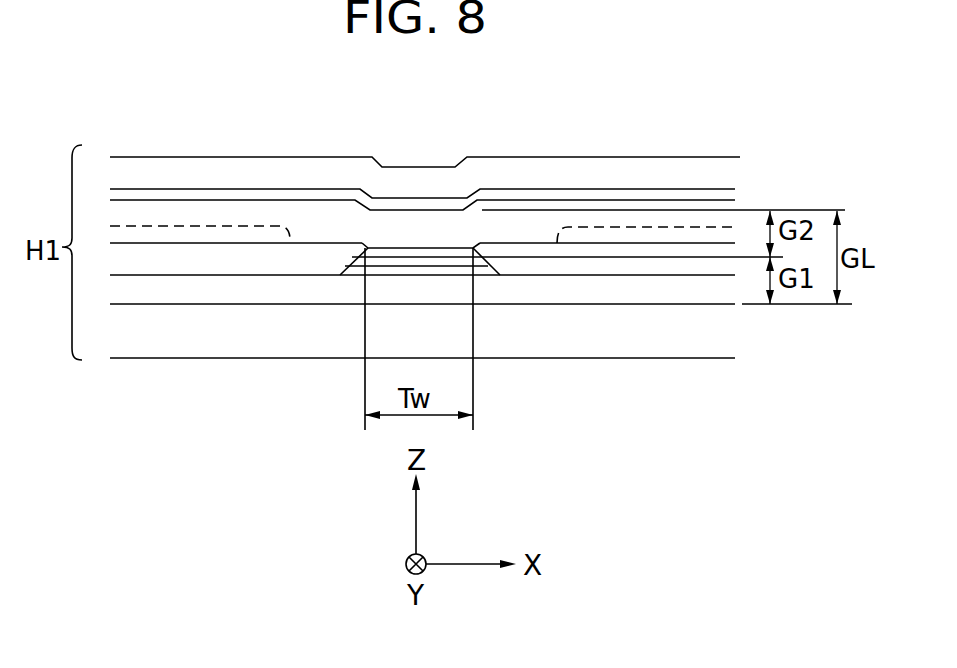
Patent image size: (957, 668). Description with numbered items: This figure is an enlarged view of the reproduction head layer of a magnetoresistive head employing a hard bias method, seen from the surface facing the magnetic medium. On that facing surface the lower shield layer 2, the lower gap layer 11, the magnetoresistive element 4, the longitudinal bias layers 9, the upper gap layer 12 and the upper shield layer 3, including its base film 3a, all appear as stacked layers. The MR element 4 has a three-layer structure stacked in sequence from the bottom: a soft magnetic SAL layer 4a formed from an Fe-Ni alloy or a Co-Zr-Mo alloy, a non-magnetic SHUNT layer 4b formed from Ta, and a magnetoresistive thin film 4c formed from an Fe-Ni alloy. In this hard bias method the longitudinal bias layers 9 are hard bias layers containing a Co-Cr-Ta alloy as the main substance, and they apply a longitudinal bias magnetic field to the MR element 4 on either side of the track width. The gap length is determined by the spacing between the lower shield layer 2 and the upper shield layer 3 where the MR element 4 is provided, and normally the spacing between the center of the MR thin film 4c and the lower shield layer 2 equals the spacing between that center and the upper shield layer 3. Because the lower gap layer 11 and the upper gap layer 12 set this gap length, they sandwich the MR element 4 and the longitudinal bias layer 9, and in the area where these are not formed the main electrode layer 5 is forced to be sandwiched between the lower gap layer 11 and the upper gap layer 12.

The lower shield layer 2 is at (672, 342).
The upper shield layer 3 is at (534, 174).
The base film 3a is at (393, 209).
The magnetoresistive element 4 is at (521, 277).
The soft magnetic layer 4a is at (357, 268).
The non-magnetic material layer 4b is at (460, 262).
The magnetoresistive thin film 4c is at (438, 249).
The main electrode layer 5 is at (148, 234).
The longitudinal bias layer 9 is at (210, 262).
The lower gap layer 11 is at (148, 290).
The upper gap layer 12 is at (313, 227).